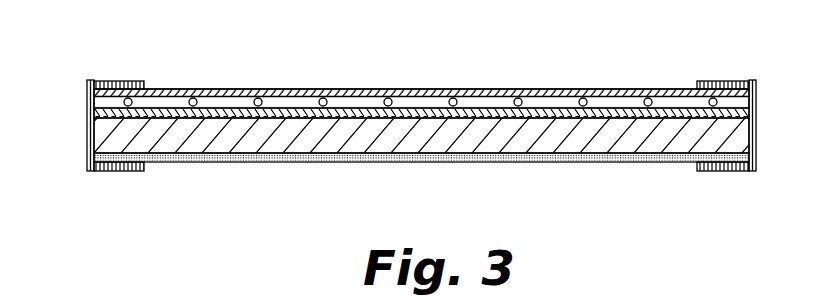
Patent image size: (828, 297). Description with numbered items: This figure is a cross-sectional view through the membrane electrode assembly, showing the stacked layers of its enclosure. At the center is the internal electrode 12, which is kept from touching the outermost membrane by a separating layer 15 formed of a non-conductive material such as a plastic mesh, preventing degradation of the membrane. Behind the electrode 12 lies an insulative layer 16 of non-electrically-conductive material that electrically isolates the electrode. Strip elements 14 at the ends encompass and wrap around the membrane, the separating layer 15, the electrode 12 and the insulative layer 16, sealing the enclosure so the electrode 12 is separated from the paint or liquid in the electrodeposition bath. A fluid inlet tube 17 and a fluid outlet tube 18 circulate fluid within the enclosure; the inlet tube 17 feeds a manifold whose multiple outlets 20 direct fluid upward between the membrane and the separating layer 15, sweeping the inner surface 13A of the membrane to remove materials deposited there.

The electrode 12 is at (740, 132).
The inner surface of the membrane 13A is at (170, 108).
The strip elements 14 is at (87, 96).
The separating layer 15 is at (100, 112).
The insulative layer 16 is at (505, 161).
The fluid inlet tube 17 is at (127, 92).
The fluid outlet tube 18 is at (648, 90).
The outlets 20 is at (198, 99).